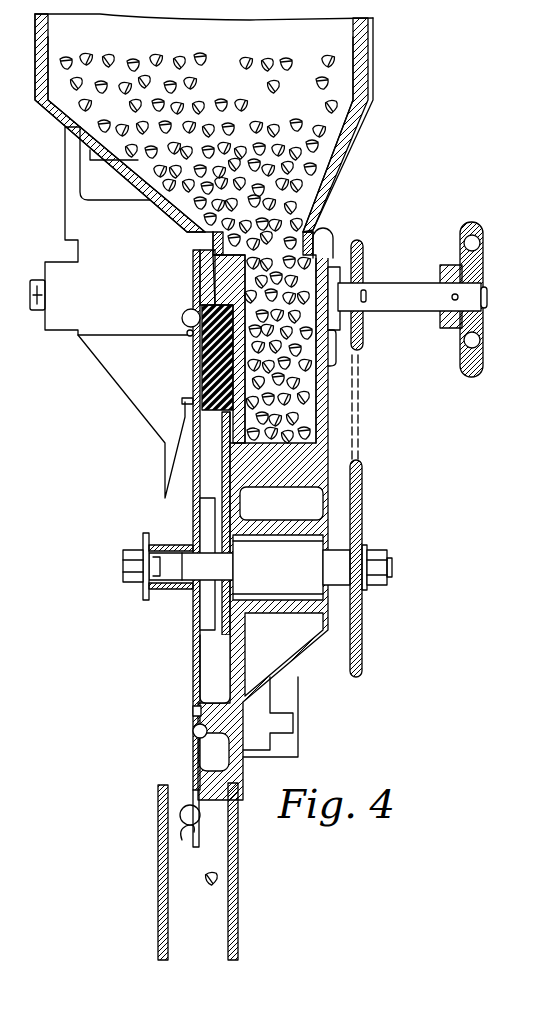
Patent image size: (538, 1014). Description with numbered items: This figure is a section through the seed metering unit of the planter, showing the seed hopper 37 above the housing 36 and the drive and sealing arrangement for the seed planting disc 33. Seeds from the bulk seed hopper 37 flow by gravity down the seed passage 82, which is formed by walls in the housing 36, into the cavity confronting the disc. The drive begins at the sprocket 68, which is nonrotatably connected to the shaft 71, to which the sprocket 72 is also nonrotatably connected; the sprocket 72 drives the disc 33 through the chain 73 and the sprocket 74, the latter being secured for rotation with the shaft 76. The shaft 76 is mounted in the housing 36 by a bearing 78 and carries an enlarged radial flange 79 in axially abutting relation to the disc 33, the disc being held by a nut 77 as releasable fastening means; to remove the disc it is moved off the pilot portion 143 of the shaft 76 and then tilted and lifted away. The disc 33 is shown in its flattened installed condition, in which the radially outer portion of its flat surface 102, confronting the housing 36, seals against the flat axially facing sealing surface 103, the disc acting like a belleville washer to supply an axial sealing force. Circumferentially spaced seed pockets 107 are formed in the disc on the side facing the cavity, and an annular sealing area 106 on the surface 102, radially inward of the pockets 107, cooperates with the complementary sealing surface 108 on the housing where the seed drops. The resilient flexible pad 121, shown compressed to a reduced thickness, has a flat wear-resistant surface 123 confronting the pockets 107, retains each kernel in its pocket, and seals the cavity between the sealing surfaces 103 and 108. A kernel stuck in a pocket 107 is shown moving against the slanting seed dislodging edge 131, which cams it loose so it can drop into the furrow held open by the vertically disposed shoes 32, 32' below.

The seed hopper 37 is at (370, 41).
The sprocket 72 is at (364, 246).
The shaft 71 is at (410, 288).
The sprocket 68 is at (470, 376).
The sealing surface 103 is at (195, 288).
The flat surface 123 is at (182, 307).
The seed pockets 107 is at (188, 330).
The flexible pad 121 is at (210, 383).
The seed passage 82 is at (310, 368).
The chain 73 is at (362, 405).
The housing 36 is at (318, 453).
The radial flange 79 is at (207, 508).
The pilot portion 143 is at (188, 545).
The sprocket 74 is at (360, 507).
The nut 77 is at (133, 583).
The shaft 76 is at (220, 580).
The seed planting disc 33 is at (193, 628).
The bearing 78 is at (302, 595).
The sealing surface 108 is at (197, 717).
The annular sealing area 106 is at (190, 740).
The seed dislodging edge 131 is at (200, 807).
The flat surface 102 is at (198, 842).
The shoe 32 is at (140, 872).
The shoe 32' is at (261, 871).